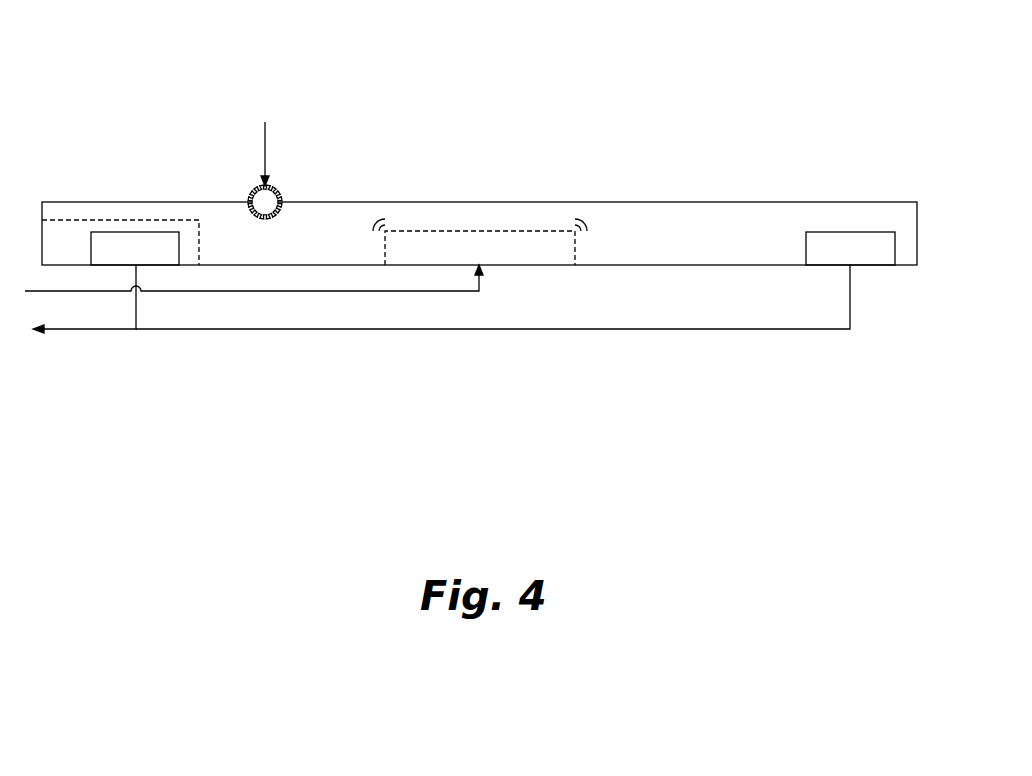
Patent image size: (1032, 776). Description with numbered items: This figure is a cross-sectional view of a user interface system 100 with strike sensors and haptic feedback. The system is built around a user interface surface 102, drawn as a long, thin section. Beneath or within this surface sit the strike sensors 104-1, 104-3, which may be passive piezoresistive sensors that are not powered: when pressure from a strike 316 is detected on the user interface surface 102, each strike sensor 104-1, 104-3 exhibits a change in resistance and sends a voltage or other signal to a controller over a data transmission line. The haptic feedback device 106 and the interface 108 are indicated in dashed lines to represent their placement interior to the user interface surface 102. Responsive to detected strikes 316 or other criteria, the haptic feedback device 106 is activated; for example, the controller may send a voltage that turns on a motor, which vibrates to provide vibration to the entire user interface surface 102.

The user interface system 100 is at (177, 78).
The user interface surface 102 is at (657, 215).
The strike sensor 104-1 is at (165, 243).
The strike sensor 104-3 is at (875, 255).
The haptic feedback device 106 is at (512, 237).
The interface 108 is at (63, 235).
The strike 316 is at (272, 197).